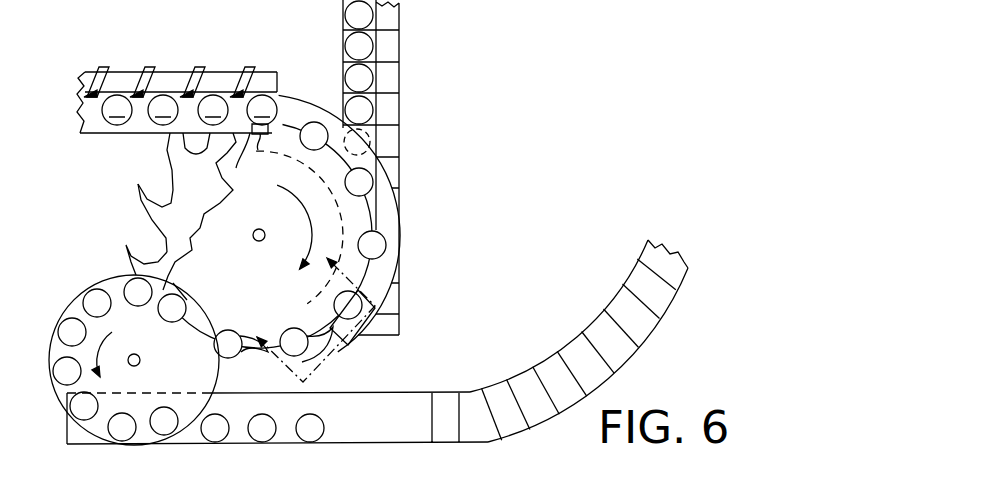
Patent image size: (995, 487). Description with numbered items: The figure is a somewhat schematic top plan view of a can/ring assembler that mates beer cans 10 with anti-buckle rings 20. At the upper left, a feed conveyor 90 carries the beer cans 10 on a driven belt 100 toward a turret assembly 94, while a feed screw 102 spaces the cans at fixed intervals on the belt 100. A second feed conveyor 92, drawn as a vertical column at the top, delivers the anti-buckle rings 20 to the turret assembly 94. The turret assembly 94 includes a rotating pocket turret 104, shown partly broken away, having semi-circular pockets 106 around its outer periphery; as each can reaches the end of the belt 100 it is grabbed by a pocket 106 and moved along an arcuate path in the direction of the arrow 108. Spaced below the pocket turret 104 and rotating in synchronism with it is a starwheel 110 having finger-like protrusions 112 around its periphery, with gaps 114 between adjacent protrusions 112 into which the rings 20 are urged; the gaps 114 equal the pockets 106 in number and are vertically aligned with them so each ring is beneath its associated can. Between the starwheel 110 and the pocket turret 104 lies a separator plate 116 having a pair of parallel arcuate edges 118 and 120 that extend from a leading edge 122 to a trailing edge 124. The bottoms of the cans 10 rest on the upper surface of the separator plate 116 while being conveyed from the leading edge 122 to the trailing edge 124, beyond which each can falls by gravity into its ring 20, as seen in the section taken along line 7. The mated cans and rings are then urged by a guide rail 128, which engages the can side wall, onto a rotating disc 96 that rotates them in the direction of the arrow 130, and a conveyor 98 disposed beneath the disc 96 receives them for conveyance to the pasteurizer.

The section line 7- 7 is at (310, 311).
The beer cans 10 is at (189, 110).
The anti-buckle rings 20 is at (351, 76).
The feed conveyor 90 is at (103, 137).
The feed conveyor 92 is at (393, 78).
The turret assembly 94 is at (123, 217).
The rotating disc 96 is at (78, 293).
The conveyor 98 is at (390, 445).
The driven belt 100 is at (82, 106).
The feed screw 102 is at (152, 68).
The rotating pocket turret 104 is at (247, 271).
The semi-circular pockets 106 is at (257, 150).
The arrow 108 is at (308, 226).
The starwheel 110 is at (193, 229).
The finger-like protrusions 112 is at (137, 200).
The gaps 114 is at (150, 243).
The separator plate 116 is at (395, 190).
The arcuate edge 118 is at (343, 218).
The arcuate edge 120 is at (395, 300).
The leading edge 122 is at (261, 151).
The trailing edge 124 is at (315, 310).
The guide rail 128 is at (180, 285).
The arrow 130 is at (110, 334).